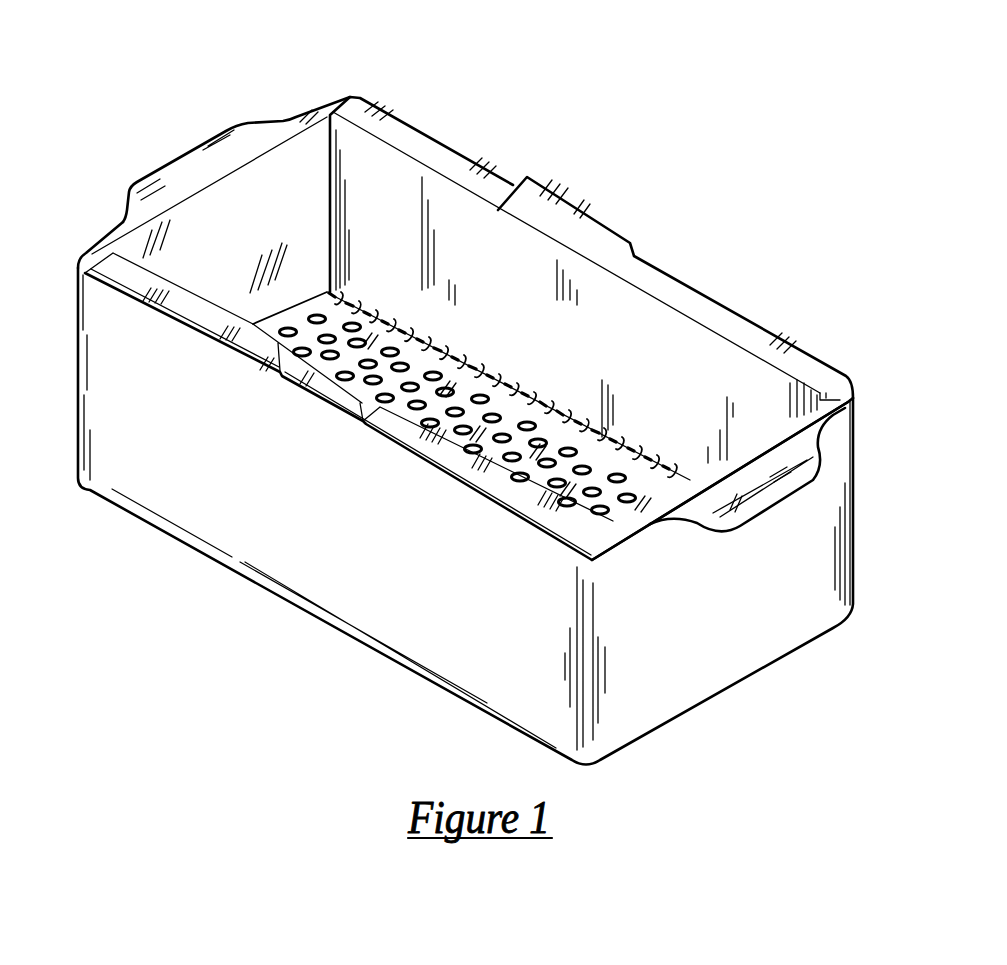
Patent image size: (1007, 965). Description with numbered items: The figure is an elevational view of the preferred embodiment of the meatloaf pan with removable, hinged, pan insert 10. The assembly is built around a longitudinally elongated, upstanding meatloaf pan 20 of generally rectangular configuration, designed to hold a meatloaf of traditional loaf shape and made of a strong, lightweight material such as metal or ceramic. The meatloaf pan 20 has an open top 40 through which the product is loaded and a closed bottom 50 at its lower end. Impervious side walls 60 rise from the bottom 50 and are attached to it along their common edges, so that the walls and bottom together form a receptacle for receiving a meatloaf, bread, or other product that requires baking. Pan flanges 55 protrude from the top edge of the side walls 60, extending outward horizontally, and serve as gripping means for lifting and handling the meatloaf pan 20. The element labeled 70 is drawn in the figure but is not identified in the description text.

The meatloaf pan with removable, hinged, pan insert 10 is at (185, 119).
The meatloaf pan 20 is at (287, 575).
The open top 40 is at (290, 128).
The closed bottom 50 is at (720, 693).
The pan flanges 55 is at (157, 187).
The side walls 60 is at (177, 413).
The back wall 70 is at (370, 193).